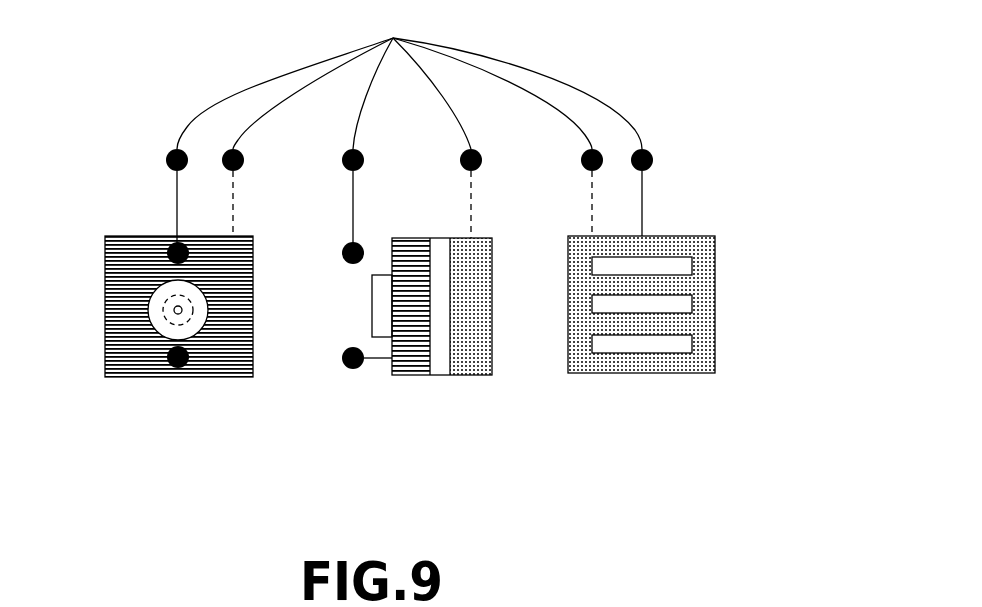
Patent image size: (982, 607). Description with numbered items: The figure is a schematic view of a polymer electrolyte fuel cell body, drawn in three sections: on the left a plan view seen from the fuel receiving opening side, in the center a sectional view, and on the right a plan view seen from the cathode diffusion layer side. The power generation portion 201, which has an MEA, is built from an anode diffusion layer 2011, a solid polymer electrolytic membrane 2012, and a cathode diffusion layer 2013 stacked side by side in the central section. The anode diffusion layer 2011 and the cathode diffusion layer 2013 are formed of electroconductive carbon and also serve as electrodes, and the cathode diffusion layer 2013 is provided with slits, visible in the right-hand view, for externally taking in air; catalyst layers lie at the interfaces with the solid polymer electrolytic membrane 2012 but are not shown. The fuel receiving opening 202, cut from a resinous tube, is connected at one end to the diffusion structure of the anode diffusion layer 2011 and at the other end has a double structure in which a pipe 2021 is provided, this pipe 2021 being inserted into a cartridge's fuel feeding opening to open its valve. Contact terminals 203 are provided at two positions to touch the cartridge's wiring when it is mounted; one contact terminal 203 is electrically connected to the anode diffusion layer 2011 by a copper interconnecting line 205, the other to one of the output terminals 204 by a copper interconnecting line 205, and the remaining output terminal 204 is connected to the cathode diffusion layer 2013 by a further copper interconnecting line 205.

The power generation portion 201 is at (577, 468).
The anode diffusion layer 2011 is at (225, 377).
The solid polymer electrolytic membrane 2012 is at (440, 378).
The cathode diffusion layer 2013 is at (617, 374).
The fuel receiving opening 202 is at (110, 314).
The pipe 2021 is at (178, 312).
The contact terminals 203 is at (168, 247).
The output terminals 204 is at (409, 87).
The copper interconnecting line 205 is at (177, 205).